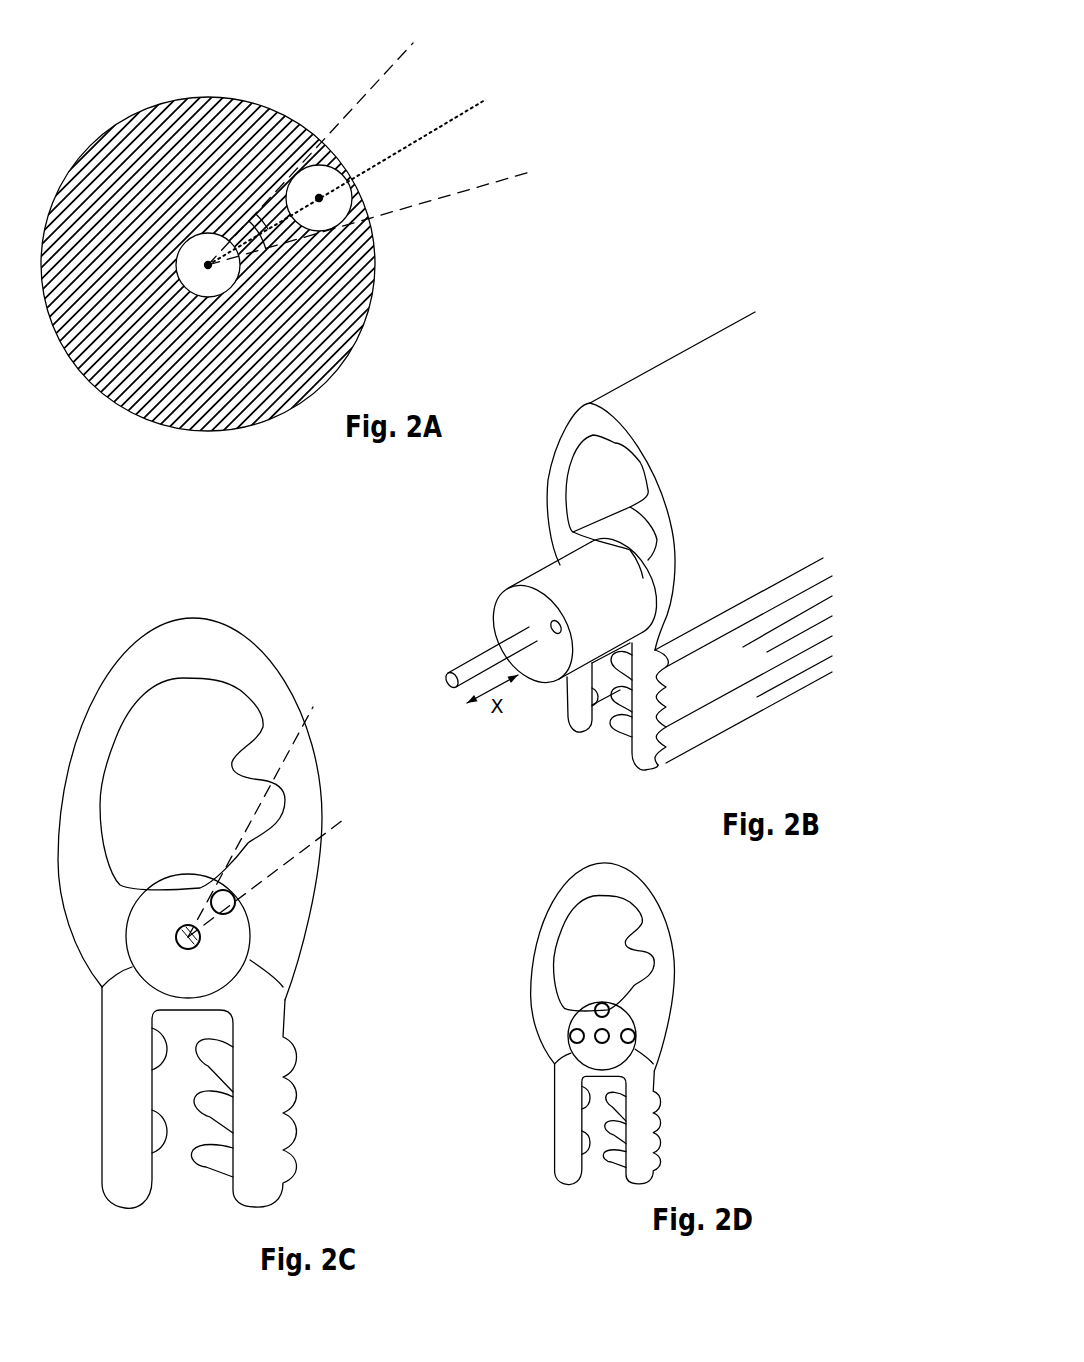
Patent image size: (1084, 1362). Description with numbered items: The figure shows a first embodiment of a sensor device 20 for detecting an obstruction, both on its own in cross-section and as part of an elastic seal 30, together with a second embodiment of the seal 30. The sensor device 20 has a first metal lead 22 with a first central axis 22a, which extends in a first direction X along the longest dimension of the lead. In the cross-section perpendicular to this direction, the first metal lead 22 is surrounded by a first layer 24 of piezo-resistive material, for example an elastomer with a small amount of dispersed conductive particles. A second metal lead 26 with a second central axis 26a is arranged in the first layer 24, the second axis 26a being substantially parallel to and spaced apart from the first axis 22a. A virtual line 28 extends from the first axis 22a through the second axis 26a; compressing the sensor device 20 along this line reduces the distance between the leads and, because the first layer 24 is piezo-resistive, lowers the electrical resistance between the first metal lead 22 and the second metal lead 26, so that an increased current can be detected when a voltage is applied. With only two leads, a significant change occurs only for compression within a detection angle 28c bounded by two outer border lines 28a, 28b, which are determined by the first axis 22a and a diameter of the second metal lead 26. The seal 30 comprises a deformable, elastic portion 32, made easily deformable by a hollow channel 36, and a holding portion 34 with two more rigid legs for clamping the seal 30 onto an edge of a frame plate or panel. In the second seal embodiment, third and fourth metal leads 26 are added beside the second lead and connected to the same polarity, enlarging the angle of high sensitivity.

In FIG. 2A, the sensor device 20 is at (217, 80).
In FIG. 2B, the sensor device 20 is at (533, 560).
In FIG. 2A, the first metal lead 22 is at (199, 282).
In FIG. 2B, the first metal lead 22 is at (477, 667).
In FIG. 2C, the first metal lead 22 is at (197, 938).
In FIG. 2D, the first metal lead 22 is at (597, 1033).
In FIG. 2A, the first central axis 22a is at (205, 250).
In FIG. 2A, the first layer 24 is at (247, 387).
In FIG. 2B, the first layer 24 is at (513, 610).
In FIG. 2C, the first layer 24 is at (210, 970).
In FIG. 2D, the first layer 24 is at (613, 1058).
In FIG. 2A, the second metal lead 26 is at (328, 215).
In FIG. 2B, the second metal lead 26 is at (555, 630).
In FIG. 2C, the second metal lead 26 is at (235, 890).
In FIG. 2D, the second metal lead 26 is at (610, 1008).
In FIG. 2A, the second central axis 26a is at (320, 180).
In FIG. 2A, the virtual line 28 is at (432, 130).
In FIG. 2A, the outer border line 28a is at (377, 90).
In FIG. 2C, the outer border line 28a is at (264, 808).
In FIG. 2A, the outer border line 28b is at (502, 182).
In FIG. 2C, the outer border line 28b is at (289, 864).
In FIG. 2A, the detection angle 28c is at (268, 255).
In FIG. 2B, the elastic seal 30 is at (636, 355).
In FIG. 2C, the elastic seal 30 is at (240, 612).
In FIG. 2D, the elastic seal 30 is at (683, 906).
In FIG. 2B, the deformable, elastic portion 32 is at (726, 505).
In FIG. 2C, the deformable, elastic portion 32 is at (170, 662).
In FIG. 2D, the deformable, elastic portion 32 is at (550, 933).
In FIG. 2B, the holding portion 34 is at (750, 678).
In FIG. 2C, the holding portion 34 is at (248, 1133).
In FIG. 2D, the holding portion 34 is at (567, 1097).
In FIG. 2B, the hollow channel 36 is at (586, 497).
In FIG. 2C, the hollow channel 36 is at (147, 780).
In FIG. 2D, the hollow channel 36 is at (585, 967).